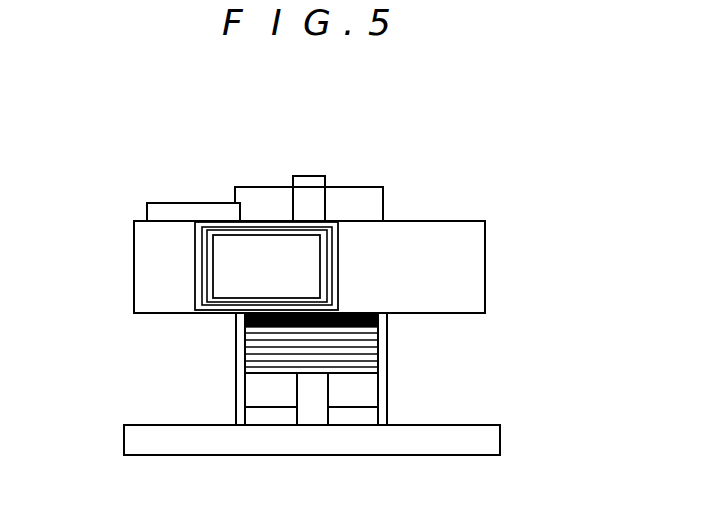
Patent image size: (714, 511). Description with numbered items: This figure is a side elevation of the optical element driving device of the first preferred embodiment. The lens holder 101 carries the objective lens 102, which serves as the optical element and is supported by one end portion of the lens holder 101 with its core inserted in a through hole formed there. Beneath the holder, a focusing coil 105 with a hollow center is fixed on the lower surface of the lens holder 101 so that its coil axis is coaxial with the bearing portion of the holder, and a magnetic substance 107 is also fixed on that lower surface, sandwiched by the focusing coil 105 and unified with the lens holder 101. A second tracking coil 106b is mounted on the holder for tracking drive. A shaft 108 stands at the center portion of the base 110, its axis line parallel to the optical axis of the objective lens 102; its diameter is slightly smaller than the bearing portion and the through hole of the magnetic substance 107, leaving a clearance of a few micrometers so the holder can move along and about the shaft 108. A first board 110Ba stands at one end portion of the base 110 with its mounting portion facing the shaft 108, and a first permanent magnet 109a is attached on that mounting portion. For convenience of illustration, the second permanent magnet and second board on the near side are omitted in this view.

The lens holder 101 is at (477, 264).
The objective lens 102 is at (188, 210).
The focusing coil 105 is at (377, 357).
The second tracking coil 106b is at (194, 289).
The magnetic substance 107 is at (237, 318).
The shaft 108 is at (308, 182).
The first permanent magnet 109a is at (377, 203).
The base 110 is at (492, 437).
The first board 110Ba is at (388, 417).